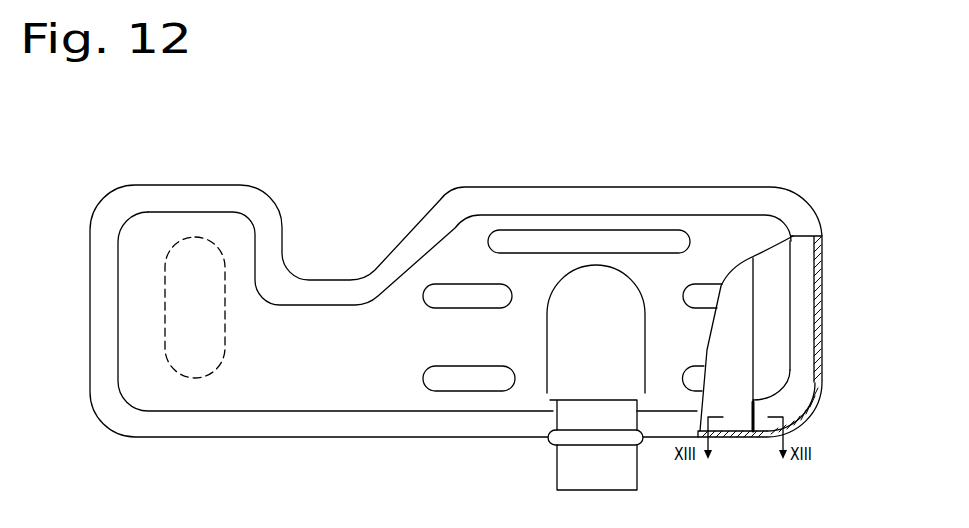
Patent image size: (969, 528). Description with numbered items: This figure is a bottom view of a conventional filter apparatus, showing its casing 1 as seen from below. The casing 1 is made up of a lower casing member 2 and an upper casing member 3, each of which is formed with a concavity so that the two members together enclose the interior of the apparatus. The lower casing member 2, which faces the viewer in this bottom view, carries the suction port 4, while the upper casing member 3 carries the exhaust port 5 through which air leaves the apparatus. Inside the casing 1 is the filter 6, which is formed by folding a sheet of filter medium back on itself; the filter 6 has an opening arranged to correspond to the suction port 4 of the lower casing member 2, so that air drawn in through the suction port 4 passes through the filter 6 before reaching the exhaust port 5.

The casing 1 is at (836, 222).
The lower casing member 2 is at (770, 318).
The upper casing member 3 is at (662, 429).
The suction port 4 is at (200, 238).
The exhaust port 5 is at (583, 491).
The filter 6 is at (728, 382).